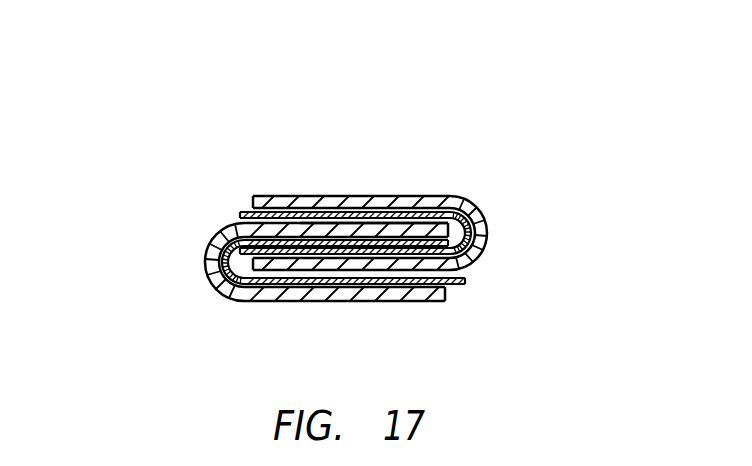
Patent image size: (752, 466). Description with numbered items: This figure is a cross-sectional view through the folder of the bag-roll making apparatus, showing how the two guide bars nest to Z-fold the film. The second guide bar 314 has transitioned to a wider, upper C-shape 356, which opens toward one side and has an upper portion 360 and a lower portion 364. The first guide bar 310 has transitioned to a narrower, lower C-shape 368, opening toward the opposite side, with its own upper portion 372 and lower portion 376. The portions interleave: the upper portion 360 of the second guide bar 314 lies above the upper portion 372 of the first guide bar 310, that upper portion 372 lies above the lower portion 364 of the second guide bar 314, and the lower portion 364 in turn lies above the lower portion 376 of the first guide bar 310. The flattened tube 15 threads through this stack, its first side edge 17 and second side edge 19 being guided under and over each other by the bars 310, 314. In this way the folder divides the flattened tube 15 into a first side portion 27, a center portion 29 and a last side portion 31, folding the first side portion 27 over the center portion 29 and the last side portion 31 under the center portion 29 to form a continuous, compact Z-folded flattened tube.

The flattened tube 15 is at (468, 245).
The first side edge 17 is at (466, 282).
The second side edge 19 is at (243, 212).
The first side portion 27 is at (392, 217).
The center portion 29 is at (333, 244).
The last side portion 31 is at (355, 281).
The first guide bar 310 is at (213, 270).
The second guide bar 314 is at (474, 229).
The upper C-shape 356 is at (473, 192).
The upper portion 360 is at (367, 202).
The lower portion 364 is at (413, 270).
The lower C-shape 368 is at (190, 242).
The upper portion 372 is at (277, 224).
The lower portion 376 is at (271, 300).